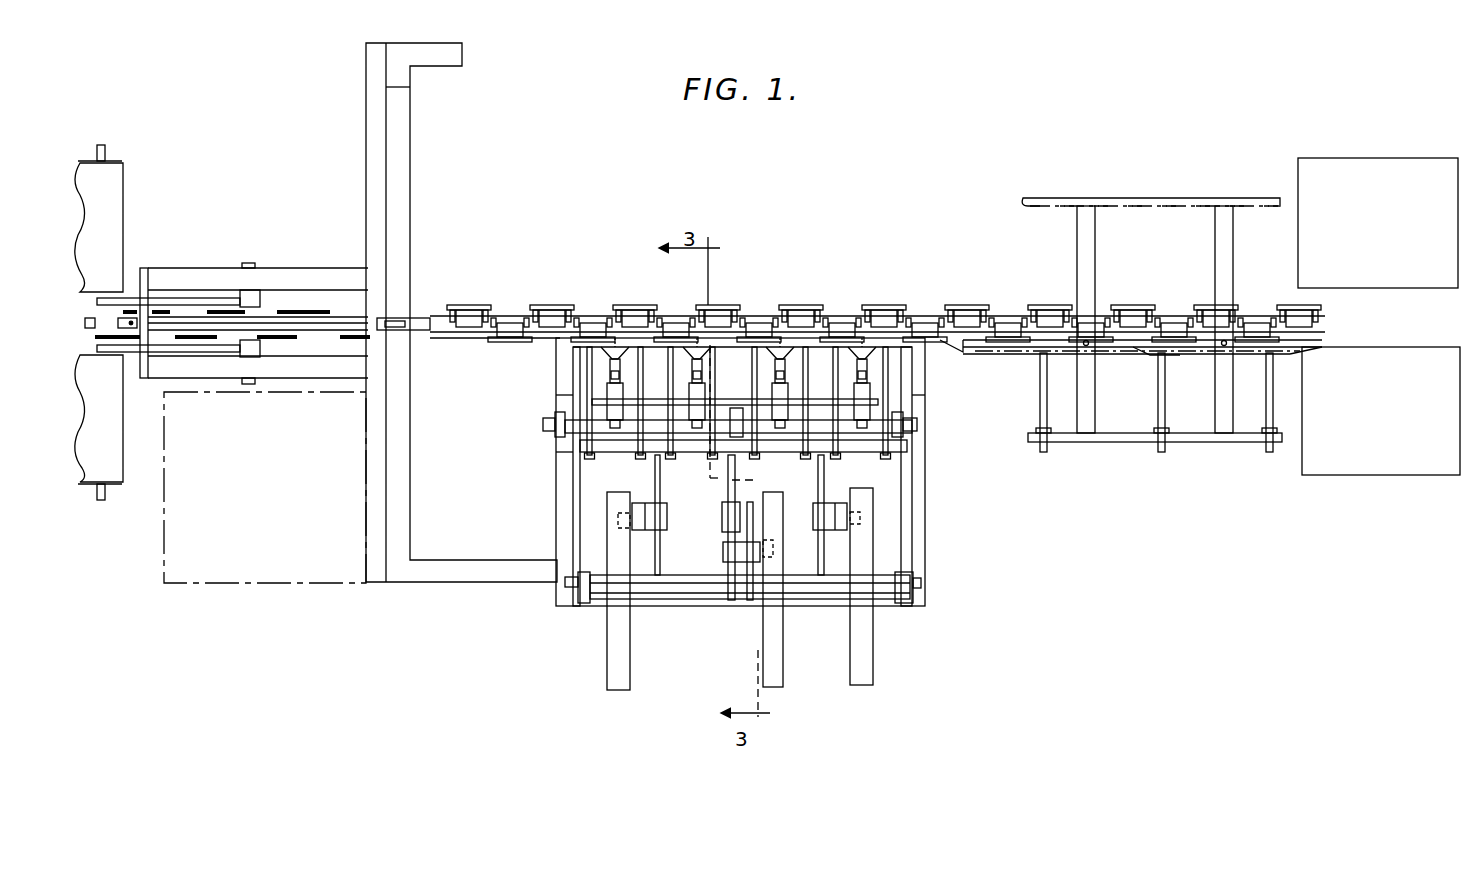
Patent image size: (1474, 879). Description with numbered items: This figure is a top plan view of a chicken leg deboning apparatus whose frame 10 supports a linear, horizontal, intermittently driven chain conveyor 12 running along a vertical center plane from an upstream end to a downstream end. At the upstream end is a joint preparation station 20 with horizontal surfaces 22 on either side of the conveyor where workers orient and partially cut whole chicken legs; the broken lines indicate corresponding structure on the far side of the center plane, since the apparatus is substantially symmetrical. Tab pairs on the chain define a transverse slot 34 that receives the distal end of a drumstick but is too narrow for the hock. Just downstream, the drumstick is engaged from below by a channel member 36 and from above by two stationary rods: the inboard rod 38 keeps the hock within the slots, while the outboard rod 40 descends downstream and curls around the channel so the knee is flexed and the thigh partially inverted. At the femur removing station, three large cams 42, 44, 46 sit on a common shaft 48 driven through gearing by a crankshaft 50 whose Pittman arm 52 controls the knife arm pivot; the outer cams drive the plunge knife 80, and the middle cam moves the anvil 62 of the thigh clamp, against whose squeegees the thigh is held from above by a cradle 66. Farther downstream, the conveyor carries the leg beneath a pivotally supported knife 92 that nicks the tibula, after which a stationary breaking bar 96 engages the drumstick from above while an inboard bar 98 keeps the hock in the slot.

The frame 10 is at (510, 573).
The conveyor 12 is at (1013, 310).
The joint preparation station 20 is at (1293, 460).
The horizontal surfaces 22 is at (1392, 237).
The transverse slot 34 is at (513, 337).
The channel member 36 is at (950, 342).
The inboard rod 38 is at (1010, 342).
The outboard rod 40 is at (1140, 353).
The cam 42 is at (635, 650).
The middle cam 44 is at (780, 643).
The cam 46 is at (862, 687).
The common shaft 48 is at (700, 590).
The crankshaft 50 is at (595, 593).
The Pittman arm 52 is at (577, 527).
The anvil 62 is at (867, 377).
The cradle 66 is at (887, 343).
The plunge knife 80 is at (807, 355).
The pivotally supported knife 92 is at (352, 313).
The stationary breaking bar 96 is at (188, 300).
The inboard bar 98 is at (268, 323).